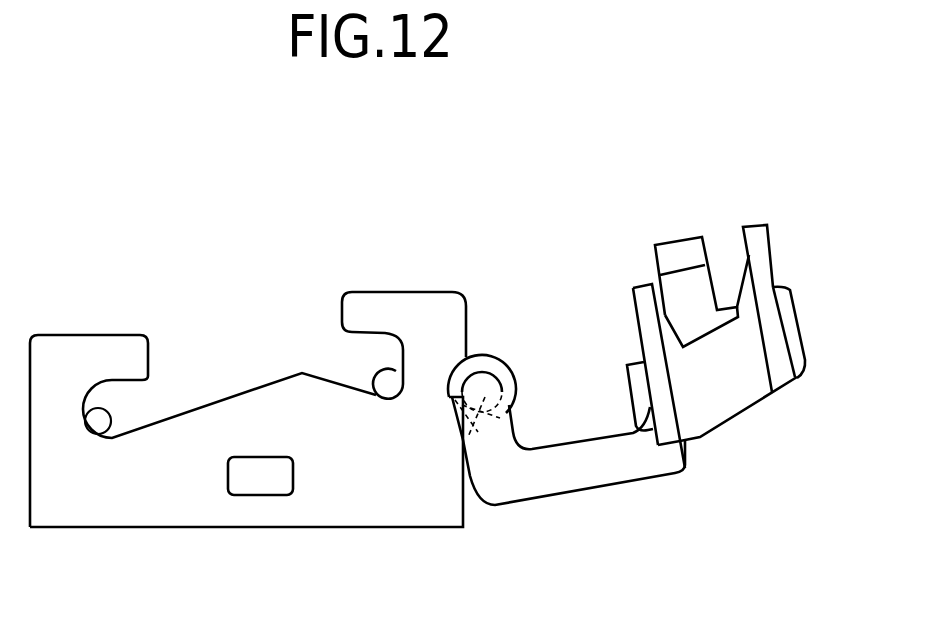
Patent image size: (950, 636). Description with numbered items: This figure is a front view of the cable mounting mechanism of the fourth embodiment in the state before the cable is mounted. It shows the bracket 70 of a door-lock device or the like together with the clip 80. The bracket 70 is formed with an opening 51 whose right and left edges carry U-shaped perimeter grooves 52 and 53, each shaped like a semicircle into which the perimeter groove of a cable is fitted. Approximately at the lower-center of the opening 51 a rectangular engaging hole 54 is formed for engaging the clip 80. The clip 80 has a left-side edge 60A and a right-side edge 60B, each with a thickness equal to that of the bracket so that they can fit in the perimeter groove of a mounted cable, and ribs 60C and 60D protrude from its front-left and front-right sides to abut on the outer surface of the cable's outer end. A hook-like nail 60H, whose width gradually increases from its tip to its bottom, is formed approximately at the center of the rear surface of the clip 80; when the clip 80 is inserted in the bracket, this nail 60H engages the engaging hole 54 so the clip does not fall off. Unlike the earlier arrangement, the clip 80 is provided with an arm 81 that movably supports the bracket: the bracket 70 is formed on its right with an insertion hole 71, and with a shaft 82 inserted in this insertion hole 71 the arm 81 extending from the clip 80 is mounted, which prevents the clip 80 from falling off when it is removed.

The bracket 70 is at (393, 528).
The opening 51 is at (344, 311).
The perimeter groove 52 is at (100, 434).
The perimeter groove 53 is at (380, 393).
The engaging hole 54 is at (273, 495).
The insertion hole 71 is at (491, 381).
The shaft 82 is at (513, 426).
The clip 80 is at (679, 352).
The arm 81 is at (588, 464).
The left-side edge 60A is at (800, 320).
The right-side edge 60B is at (628, 374).
The rib 60C is at (757, 232).
The rib 60D is at (643, 288).
The hook-like nail 60H is at (680, 247).